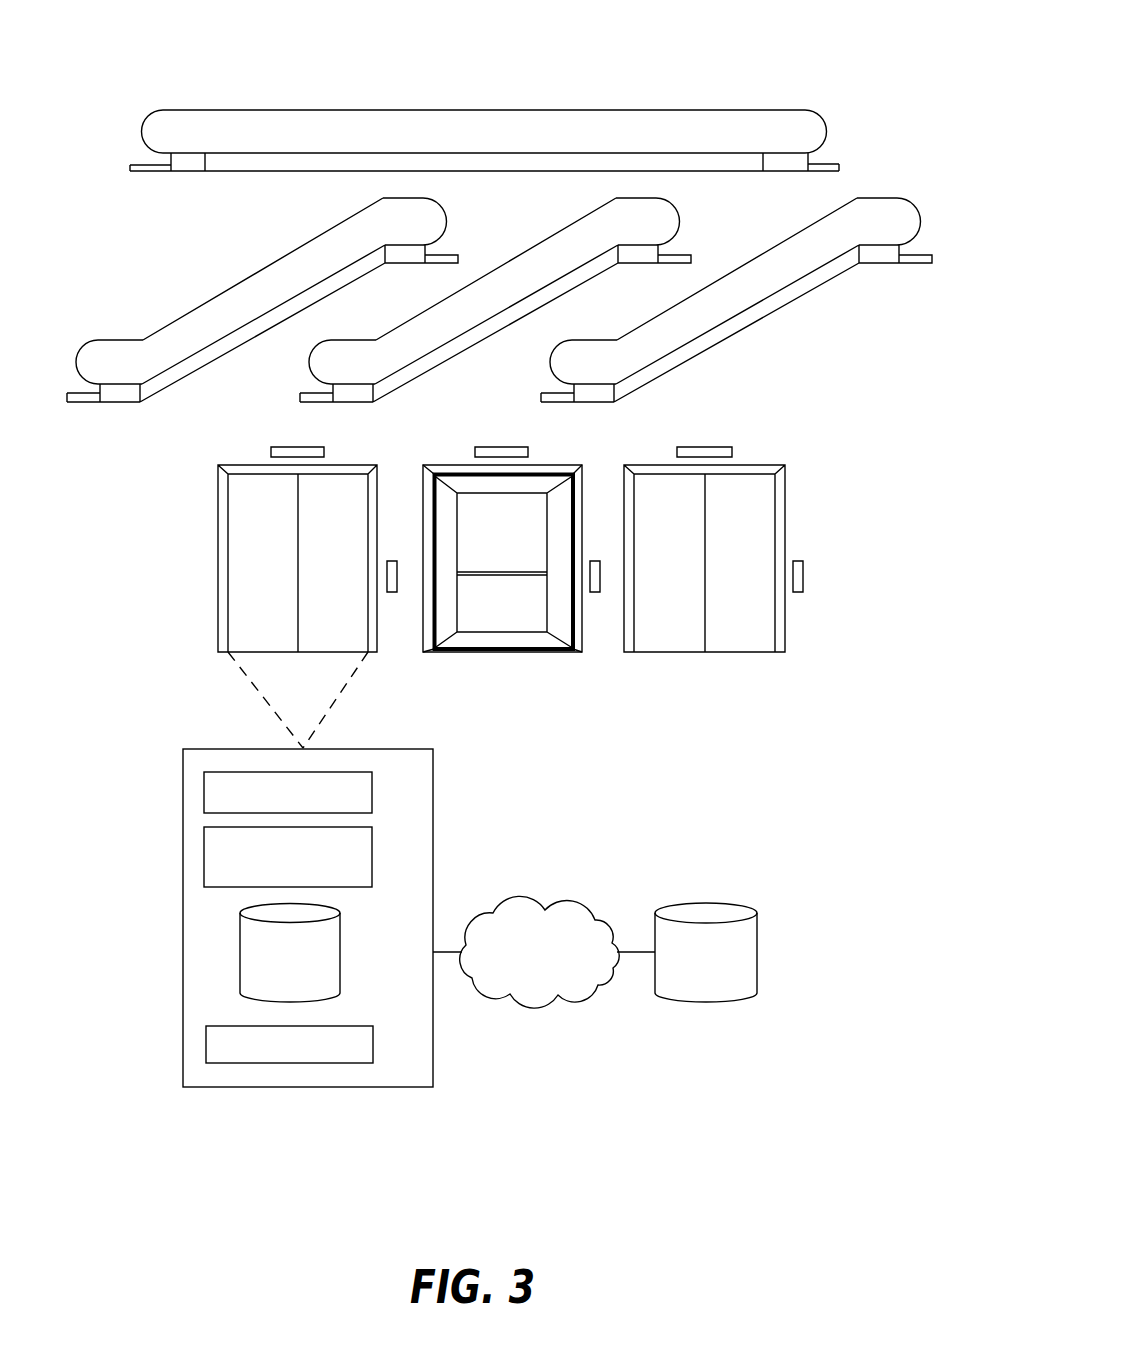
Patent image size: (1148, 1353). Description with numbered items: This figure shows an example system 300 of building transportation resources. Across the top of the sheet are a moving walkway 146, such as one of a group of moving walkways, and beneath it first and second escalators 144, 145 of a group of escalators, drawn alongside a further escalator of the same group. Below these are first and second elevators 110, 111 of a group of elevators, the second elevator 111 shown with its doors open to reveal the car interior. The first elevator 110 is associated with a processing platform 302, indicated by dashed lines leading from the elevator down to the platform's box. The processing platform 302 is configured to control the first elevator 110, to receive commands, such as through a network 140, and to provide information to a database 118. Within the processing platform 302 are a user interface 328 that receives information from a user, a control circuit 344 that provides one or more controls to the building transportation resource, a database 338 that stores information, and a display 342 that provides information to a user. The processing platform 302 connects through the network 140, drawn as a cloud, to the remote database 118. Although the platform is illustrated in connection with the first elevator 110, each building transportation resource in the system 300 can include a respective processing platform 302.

The system 300 is at (732, 37).
The moving walkway 146 is at (829, 128).
The first escalator 144 is at (447, 221).
The second escalator 145 is at (680, 221).
The first elevator 110 is at (358, 465).
The second elevator 111 is at (565, 465).
The processing platform 302 is at (433, 784).
The user interface 328 is at (372, 779).
The control circuit 344 is at (372, 838).
The database 338 is at (340, 916).
The display 342 is at (373, 1033).
The network 140 is at (576, 903).
The database 118 is at (757, 917).